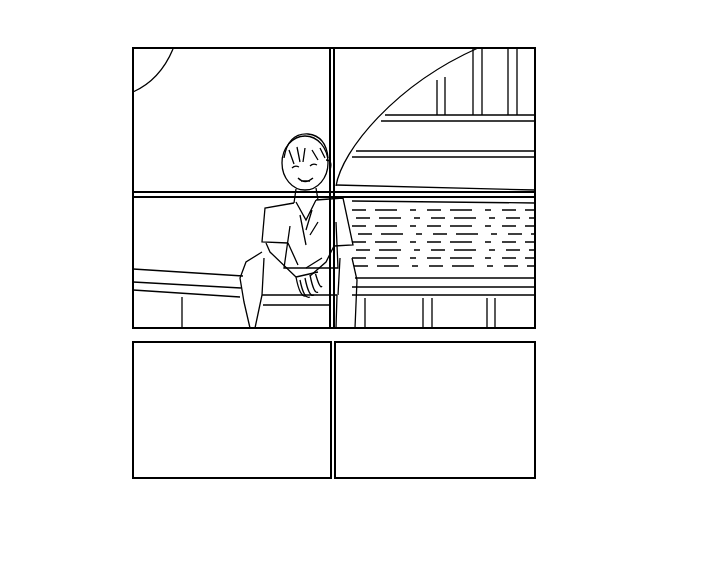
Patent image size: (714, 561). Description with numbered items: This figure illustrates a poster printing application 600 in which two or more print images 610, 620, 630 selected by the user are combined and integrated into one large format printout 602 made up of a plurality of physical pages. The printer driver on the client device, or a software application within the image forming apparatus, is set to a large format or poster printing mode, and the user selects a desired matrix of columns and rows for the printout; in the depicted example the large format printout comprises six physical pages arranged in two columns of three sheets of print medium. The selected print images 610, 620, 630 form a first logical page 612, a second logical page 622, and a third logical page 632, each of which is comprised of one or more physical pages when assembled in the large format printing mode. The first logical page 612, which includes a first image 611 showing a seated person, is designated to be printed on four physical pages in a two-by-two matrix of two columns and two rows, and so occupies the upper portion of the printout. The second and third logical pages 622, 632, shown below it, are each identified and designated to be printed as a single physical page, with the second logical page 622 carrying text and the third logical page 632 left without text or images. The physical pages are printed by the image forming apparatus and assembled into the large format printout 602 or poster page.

The poster printing application 600 is at (108, 49).
The large format printout 602 is at (586, 197).
The print image 610 is at (108, 187).
The first image 611 is at (119, 258).
The first logical page 612 is at (551, 148).
The print image 620 is at (110, 453).
The second logical page 622 is at (178, 479).
The print image 630 is at (562, 455).
The third logical page 632 is at (537, 418).